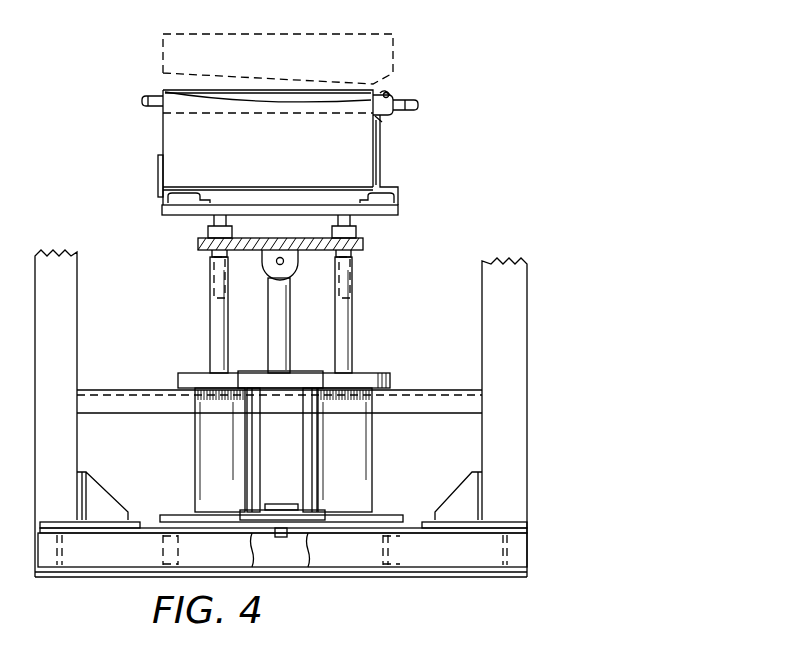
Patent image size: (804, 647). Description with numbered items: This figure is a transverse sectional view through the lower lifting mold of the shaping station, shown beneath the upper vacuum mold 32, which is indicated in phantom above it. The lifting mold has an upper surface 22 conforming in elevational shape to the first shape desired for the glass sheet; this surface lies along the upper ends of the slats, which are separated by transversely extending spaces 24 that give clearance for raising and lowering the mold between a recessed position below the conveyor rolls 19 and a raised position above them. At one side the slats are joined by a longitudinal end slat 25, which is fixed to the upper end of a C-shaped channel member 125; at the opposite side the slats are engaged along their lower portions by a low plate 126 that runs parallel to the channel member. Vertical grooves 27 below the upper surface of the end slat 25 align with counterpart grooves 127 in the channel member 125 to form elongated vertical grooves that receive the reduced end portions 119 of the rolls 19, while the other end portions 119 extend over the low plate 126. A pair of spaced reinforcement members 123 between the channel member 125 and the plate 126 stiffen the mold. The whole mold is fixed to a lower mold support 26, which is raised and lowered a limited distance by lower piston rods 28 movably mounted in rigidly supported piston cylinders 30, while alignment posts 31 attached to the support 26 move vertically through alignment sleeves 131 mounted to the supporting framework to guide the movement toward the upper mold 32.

The conveyor rolls 19 is at (197, 113).
The upper surface 22 is at (250, 100).
The transversely extending spaces 24 is at (163, 128).
The longitudinal end slat 25 is at (389, 94).
The lower mold support 26 is at (309, 240).
The vertical grooves 27 is at (386, 92).
The lower piston rods 28 is at (273, 298).
The piston cylinder 30 is at (286, 450).
The alignment posts 31 is at (214, 272).
The upper vacuum mold 32 is at (396, 65).
The reduced end portions 119 is at (152, 96).
The reinforcement members 123 is at (278, 203).
The C-shaped channel member 125 is at (380, 150).
The low plate 126 is at (158, 166).
The counterpart groove 127 is at (382, 121).
The alignment sleeves 131 is at (212, 305).